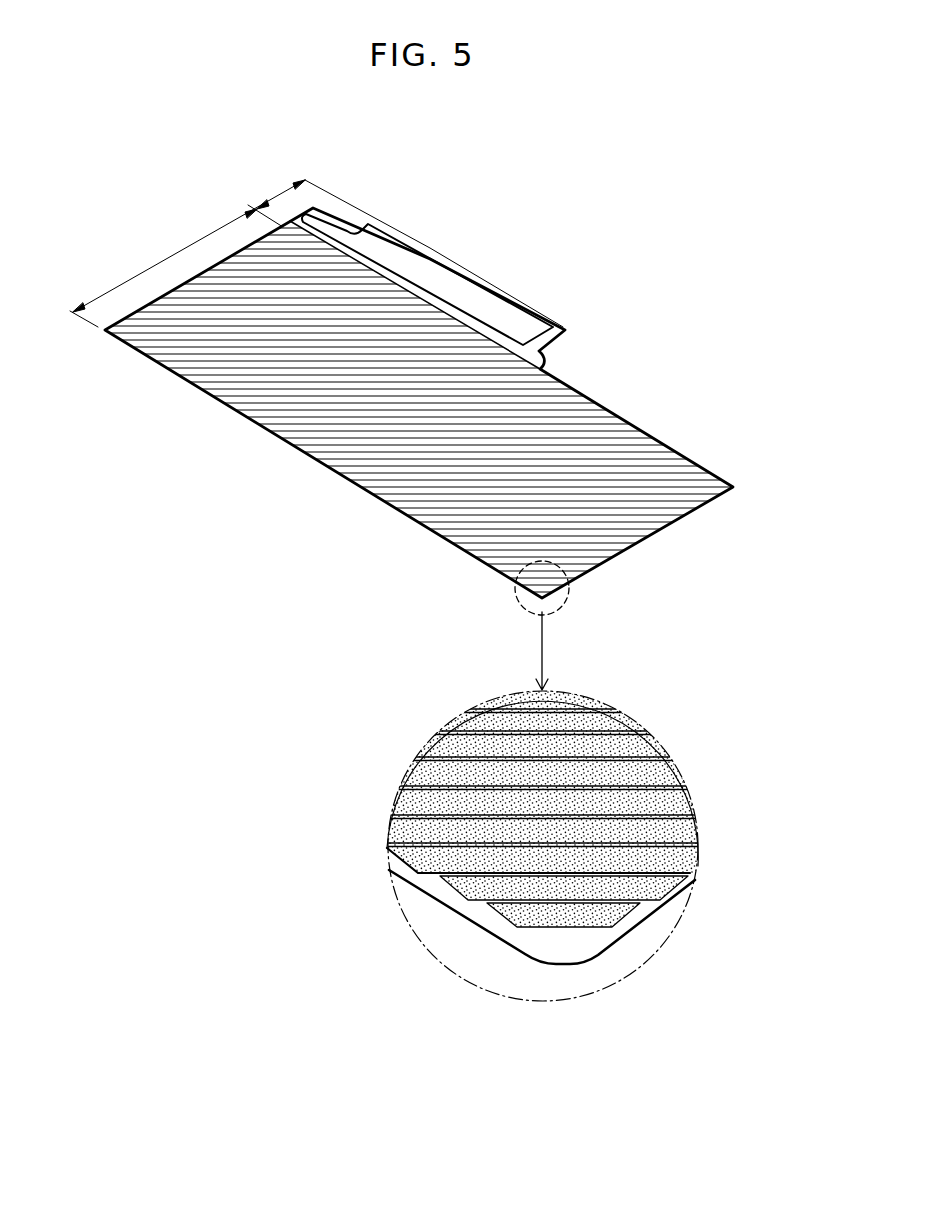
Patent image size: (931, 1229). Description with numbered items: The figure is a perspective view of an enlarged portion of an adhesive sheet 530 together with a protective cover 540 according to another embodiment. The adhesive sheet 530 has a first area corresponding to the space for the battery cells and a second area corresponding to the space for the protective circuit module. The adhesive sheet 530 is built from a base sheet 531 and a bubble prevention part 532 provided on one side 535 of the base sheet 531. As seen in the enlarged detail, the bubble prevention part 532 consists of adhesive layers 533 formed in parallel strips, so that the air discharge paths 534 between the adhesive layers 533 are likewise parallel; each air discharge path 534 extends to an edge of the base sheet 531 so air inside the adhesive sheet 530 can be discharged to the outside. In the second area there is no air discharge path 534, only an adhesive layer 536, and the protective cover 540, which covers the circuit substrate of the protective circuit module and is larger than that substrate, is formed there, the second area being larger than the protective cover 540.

The adhesive sheet 530 is at (252, 458).
The base sheet 531 is at (640, 920).
The bubble prevention part 532 is at (779, 790).
The adhesive layer 533 is at (657, 828).
The air discharge path 534 is at (700, 861).
The one side of the base sheet 535 is at (558, 935).
The adhesive layer 536 is at (487, 335).
The protective cover 540 is at (448, 283).